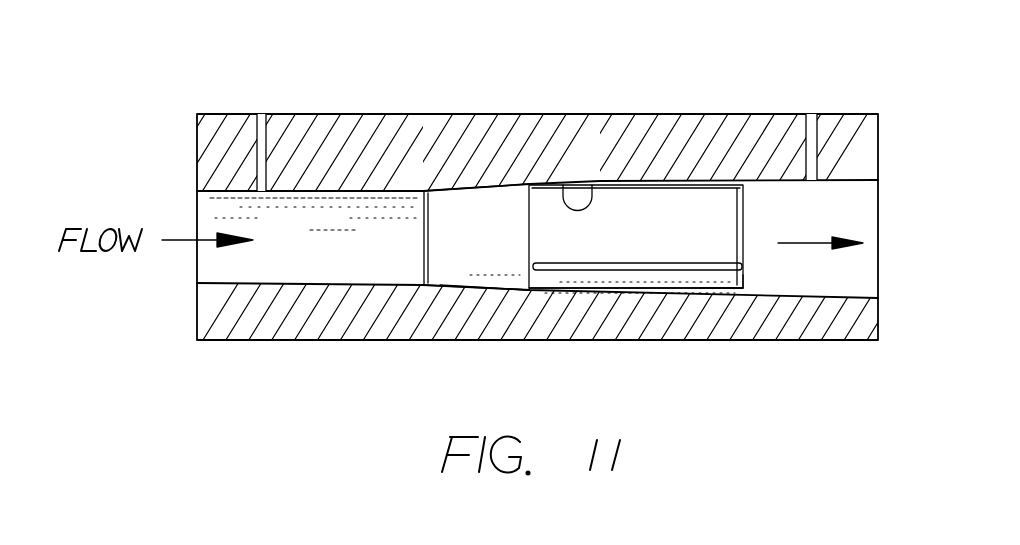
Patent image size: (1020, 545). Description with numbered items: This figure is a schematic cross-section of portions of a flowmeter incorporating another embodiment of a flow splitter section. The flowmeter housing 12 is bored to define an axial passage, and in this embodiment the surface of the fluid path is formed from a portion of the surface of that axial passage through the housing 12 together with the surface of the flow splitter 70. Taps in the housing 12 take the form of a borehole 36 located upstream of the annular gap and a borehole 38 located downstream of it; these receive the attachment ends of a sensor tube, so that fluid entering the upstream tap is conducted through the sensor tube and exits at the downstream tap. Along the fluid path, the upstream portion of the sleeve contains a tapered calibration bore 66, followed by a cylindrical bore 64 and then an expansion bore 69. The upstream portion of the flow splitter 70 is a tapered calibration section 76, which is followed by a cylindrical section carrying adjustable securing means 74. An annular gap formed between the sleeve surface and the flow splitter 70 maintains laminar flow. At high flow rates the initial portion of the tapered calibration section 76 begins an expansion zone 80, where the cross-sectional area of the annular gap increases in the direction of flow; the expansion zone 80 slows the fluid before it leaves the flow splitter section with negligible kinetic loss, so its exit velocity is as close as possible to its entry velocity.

The housing 12 is at (812, 332).
The borehole 36 is at (262, 143).
The borehole 38 is at (806, 143).
The cylindrical bore 64 is at (569, 186).
The tapered calibration bore 66 is at (477, 283).
The expansion bore 69 is at (724, 300).
The flow splitter 70 is at (642, 205).
The adjustable securing means 74 is at (597, 270).
The tapered calibration section 76 is at (476, 224).
The expansion zone 80 is at (740, 293).